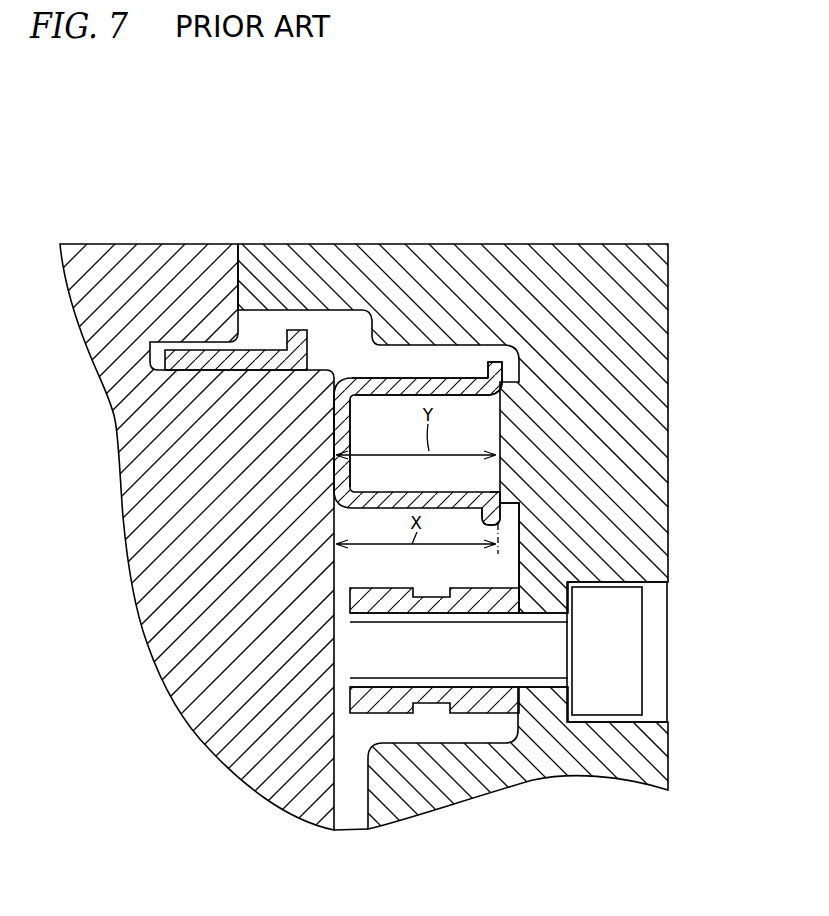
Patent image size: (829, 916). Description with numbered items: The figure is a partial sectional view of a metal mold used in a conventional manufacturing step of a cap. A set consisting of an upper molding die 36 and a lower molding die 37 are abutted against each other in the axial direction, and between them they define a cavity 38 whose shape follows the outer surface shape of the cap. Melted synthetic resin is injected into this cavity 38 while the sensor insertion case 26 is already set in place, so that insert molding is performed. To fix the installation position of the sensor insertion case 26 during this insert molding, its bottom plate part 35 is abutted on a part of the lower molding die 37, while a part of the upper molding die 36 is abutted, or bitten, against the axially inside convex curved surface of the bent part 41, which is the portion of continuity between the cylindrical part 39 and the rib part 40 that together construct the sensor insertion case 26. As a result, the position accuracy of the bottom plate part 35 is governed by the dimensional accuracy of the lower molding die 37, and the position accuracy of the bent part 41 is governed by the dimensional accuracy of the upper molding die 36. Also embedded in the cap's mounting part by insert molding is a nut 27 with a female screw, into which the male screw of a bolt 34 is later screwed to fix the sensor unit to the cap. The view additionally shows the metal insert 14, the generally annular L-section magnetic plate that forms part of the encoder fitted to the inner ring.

The metal insert 14 is at (249, 357).
The sensor insertion case 26 is at (428, 380).
The nut 27 is at (477, 713).
The bolt 34 is at (612, 657).
The bottom plate part 35 is at (343, 453).
The upper molding die 36 is at (638, 268).
The lower molding die 37 is at (93, 272).
The cavity 38 is at (510, 548).
The cylindrical part 39 is at (409, 380).
The rib part 40 is at (497, 362).
The bent part 41 is at (483, 377).